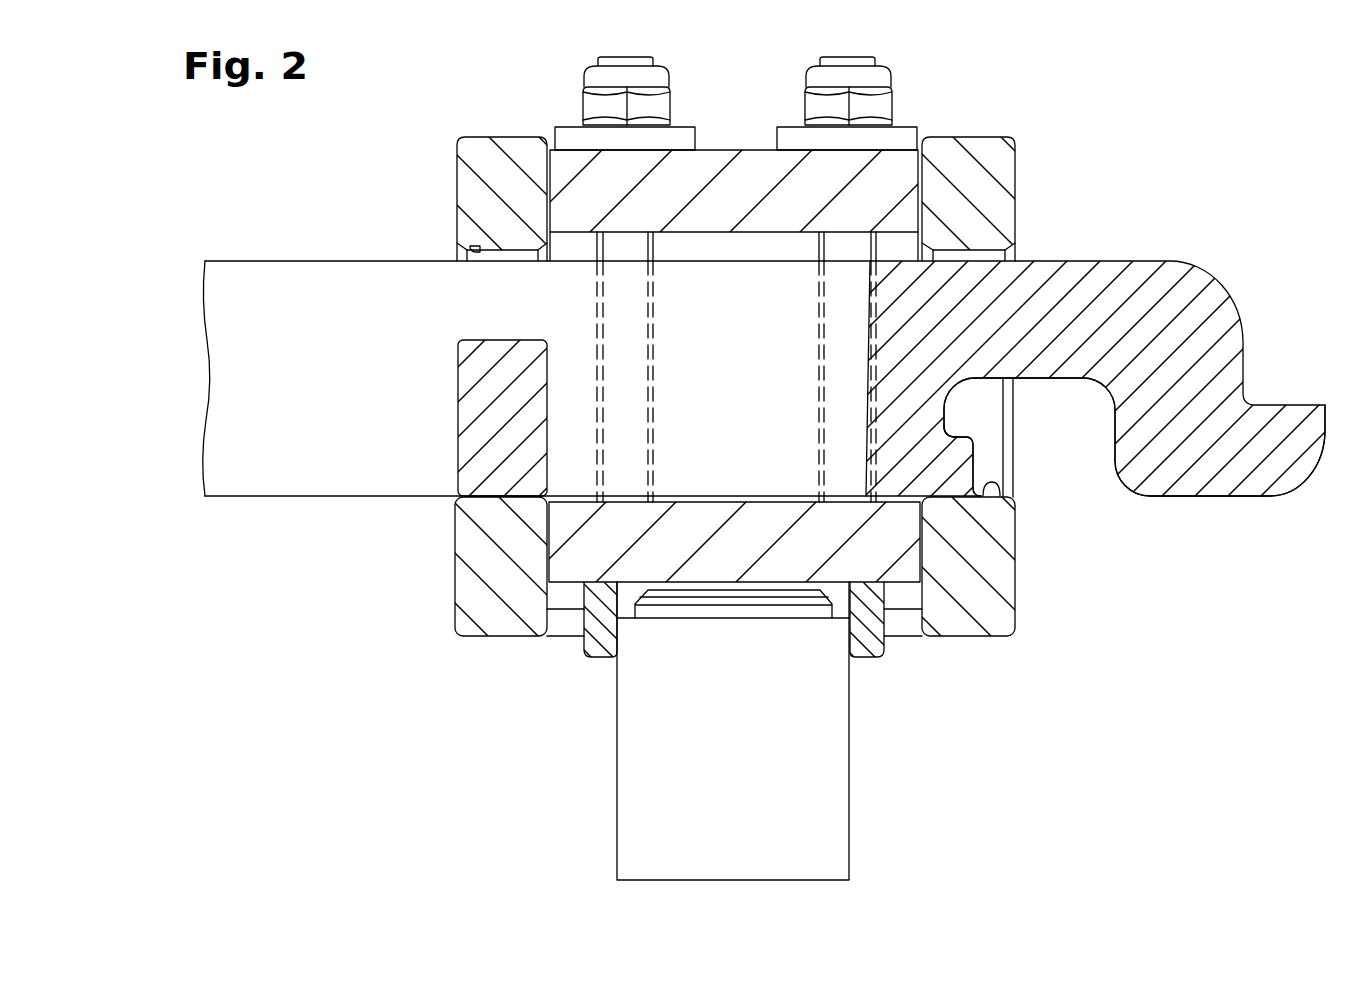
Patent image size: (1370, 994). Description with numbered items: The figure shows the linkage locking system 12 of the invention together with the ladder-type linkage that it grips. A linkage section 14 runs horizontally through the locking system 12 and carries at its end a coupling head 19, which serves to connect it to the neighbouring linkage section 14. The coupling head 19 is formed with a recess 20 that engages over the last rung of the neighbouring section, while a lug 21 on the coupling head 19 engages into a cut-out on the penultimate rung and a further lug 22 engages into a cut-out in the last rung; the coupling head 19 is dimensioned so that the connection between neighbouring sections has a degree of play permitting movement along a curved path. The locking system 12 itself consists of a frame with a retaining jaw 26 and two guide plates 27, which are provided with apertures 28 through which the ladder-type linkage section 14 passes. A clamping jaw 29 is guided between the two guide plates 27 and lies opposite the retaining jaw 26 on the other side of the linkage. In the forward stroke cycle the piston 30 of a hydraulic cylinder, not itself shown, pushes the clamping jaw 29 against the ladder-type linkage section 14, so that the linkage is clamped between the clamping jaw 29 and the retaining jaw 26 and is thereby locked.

The linkage locking system 12 is at (950, 122).
The linkage section 14 is at (278, 270).
The coupling head 19 is at (1108, 283).
The recess 20 is at (1083, 425).
The lug 21 is at (1232, 440).
The lug 22 is at (953, 470).
The retaining jaw 26 is at (710, 197).
The guide plates 27 is at (480, 193).
The apertures 28 is at (462, 247).
The clamping jaw 29 is at (897, 562).
The piston 30 is at (810, 805).